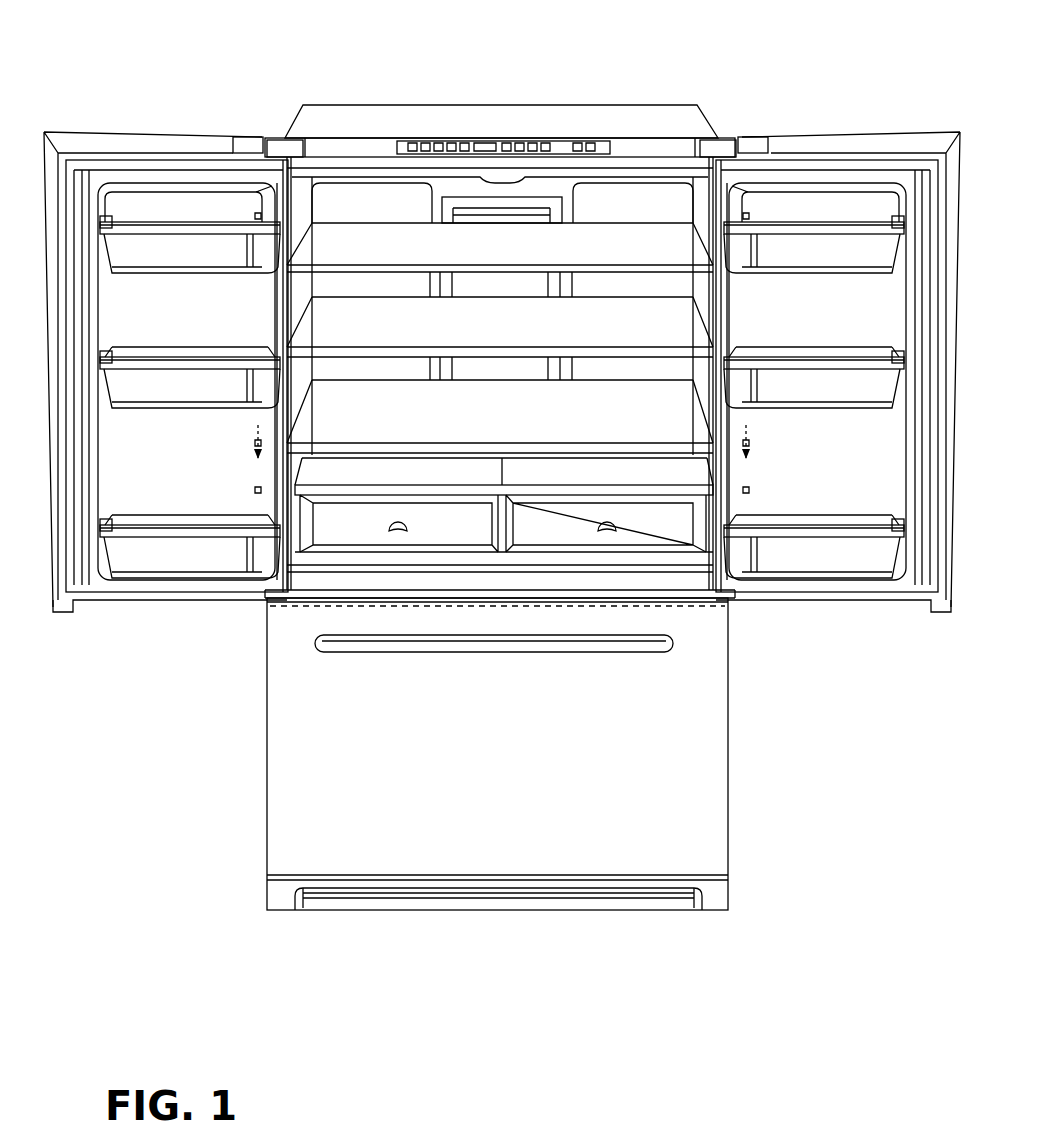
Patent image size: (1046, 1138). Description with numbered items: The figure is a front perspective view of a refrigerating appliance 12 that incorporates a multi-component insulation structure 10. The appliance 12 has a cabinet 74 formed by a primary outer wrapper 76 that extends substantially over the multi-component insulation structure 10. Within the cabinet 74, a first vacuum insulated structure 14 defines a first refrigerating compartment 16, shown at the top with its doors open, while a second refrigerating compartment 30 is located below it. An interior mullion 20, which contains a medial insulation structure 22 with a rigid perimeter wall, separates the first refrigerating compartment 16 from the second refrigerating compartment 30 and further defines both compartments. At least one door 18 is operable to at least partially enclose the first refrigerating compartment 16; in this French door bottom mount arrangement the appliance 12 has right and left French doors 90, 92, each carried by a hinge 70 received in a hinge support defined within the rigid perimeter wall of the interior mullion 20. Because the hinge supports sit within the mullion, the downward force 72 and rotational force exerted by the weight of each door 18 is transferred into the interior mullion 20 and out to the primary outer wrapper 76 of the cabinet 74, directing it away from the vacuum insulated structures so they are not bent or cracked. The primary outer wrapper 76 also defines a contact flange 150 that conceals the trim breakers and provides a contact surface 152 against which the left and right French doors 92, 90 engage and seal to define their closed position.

The multi-component insulation structure 10 is at (312, 612).
The appliance 12 is at (568, 75).
The first vacuum insulated structure 14 is at (660, 128).
The first refrigerating compartment 16 is at (375, 205).
The door 18 is at (187, 128).
The interior mullion 20 is at (315, 580).
The medial insulation structure 22 is at (373, 607).
The second refrigerating compartment 30 is at (300, 772).
The hinge 70 is at (278, 150).
The downward force 72 is at (258, 425).
The cabinet 74 is at (518, 103).
The primary outer wrapper 76 is at (622, 123).
The right French door 90 is at (913, 595).
The left French door 92 is at (100, 595).
The contact flange 150 is at (533, 577).
The contact surface 152 is at (433, 580).